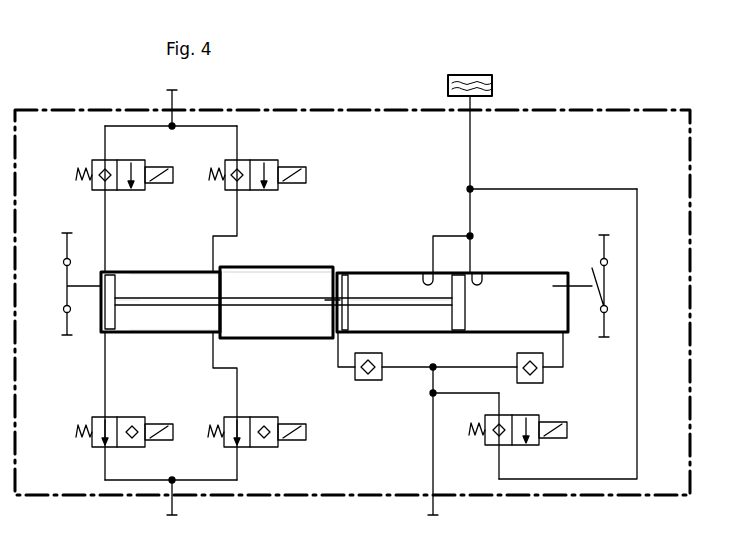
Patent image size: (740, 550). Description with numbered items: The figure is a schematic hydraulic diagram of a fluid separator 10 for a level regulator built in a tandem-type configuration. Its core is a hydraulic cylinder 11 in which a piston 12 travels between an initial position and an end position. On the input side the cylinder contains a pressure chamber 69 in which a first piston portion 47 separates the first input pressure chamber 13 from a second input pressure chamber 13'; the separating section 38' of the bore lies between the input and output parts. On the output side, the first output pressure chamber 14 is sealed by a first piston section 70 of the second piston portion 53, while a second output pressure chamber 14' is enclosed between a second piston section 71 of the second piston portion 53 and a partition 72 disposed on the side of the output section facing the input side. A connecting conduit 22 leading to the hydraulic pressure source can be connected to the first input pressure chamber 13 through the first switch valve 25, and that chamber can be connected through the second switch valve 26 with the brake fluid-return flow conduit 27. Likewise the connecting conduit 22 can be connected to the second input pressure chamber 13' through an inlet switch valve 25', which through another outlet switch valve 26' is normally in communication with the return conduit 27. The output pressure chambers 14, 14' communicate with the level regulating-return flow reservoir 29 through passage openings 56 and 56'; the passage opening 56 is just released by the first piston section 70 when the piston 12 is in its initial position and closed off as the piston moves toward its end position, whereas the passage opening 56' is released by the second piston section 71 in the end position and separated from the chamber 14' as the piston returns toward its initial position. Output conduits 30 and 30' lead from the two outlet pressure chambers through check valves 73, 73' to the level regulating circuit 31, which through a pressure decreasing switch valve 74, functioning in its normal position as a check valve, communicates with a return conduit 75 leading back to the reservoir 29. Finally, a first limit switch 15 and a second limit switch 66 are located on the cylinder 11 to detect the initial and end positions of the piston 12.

The fluid separator 10 is at (690, 110).
The hydraulic cylinder 11 is at (305, 267).
The piston 12 is at (278, 300).
The first input pressure chamber 13 is at (145, 320).
The second input pressure chamber 13' is at (174, 321).
The first output pressure chamber 14 is at (519, 285).
The second output pressure chamber 14' is at (452, 287).
The first limit switch 15 is at (62, 264).
The connecting conduit 22 is at (177, 92).
The first switch valve 25 is at (124, 164).
The inlet switch valve 25' is at (260, 164).
The second switch valve 26 is at (125, 445).
The outlet switch valve 26' is at (262, 445).
The brake fluid-return flow conduit 27 is at (177, 515).
The level regulating-return flow reservoir 29 is at (492, 88).
The output conduit 30 is at (571, 352).
The output conduit 30' is at (335, 370).
The level regulating circuit 31 is at (437, 515).
The separating section 38' is at (277, 262).
The first piston portion 47 is at (112, 290).
The second piston portion 53 is at (402, 312).
The passage opening 56 is at (552, 229).
The passage opening 56' is at (436, 253).
The second limit switch 66 is at (610, 274).
The pressure chamber 69 is at (127, 312).
The first piston section 70 is at (470, 318).
The second piston section 71 is at (352, 290).
The partition 72 is at (330, 318).
The check valve 73 is at (549, 380).
The check valve 73' is at (436, 385).
The pressure decreasing switch valve 74 is at (538, 443).
The return conduit 75 is at (637, 327).